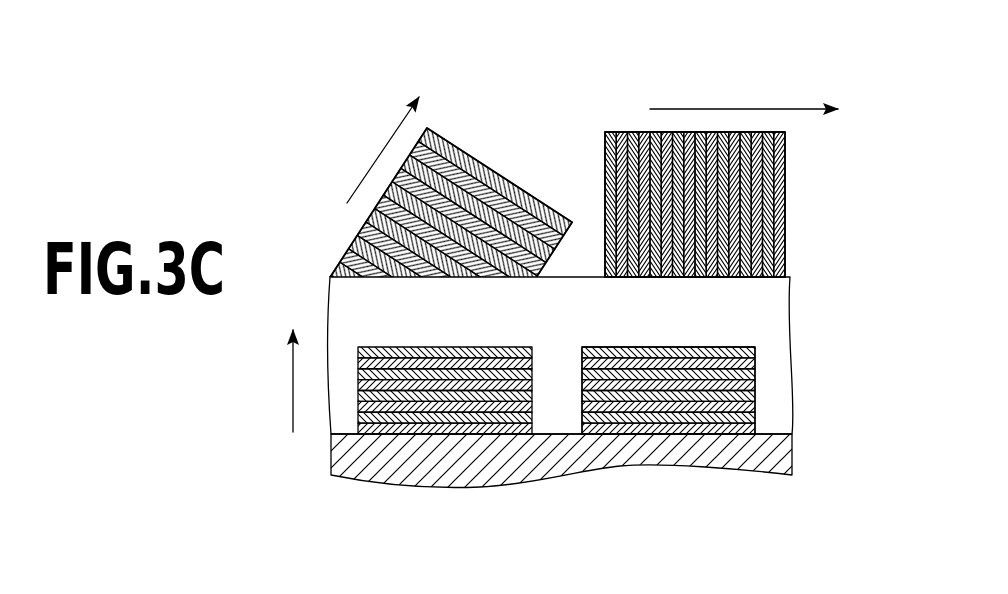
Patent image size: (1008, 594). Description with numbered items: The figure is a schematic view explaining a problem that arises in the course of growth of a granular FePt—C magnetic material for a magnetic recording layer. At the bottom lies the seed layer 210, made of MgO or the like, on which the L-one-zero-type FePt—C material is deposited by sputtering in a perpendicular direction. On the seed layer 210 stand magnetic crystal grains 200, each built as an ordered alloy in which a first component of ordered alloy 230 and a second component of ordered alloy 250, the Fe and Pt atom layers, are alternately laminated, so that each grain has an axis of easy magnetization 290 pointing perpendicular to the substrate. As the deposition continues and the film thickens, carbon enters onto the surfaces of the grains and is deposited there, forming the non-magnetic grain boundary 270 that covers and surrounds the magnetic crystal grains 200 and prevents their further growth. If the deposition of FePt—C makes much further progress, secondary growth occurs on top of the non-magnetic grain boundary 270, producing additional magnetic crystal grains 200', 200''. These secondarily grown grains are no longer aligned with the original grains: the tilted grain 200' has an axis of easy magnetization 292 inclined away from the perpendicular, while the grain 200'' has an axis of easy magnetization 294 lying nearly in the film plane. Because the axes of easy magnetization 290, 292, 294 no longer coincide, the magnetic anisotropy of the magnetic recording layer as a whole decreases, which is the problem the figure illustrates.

The magnetic crystal grain 200 is at (556, 449).
The magnetic crystal grain 200' is at (447, 227).
The magnetic crystal grain 200'' is at (695, 157).
The seed layer 210 is at (792, 452).
The first component of ordered alloy 230 is at (755, 424).
The second component of ordered alloy 250 is at (755, 407).
The non-magnetic grain boundary 270 is at (780, 322).
The axis of easy magnetization 290 is at (292, 386).
The axis of easy magnetization 292 is at (389, 139).
The axis of easy magnetization 294 is at (738, 109).